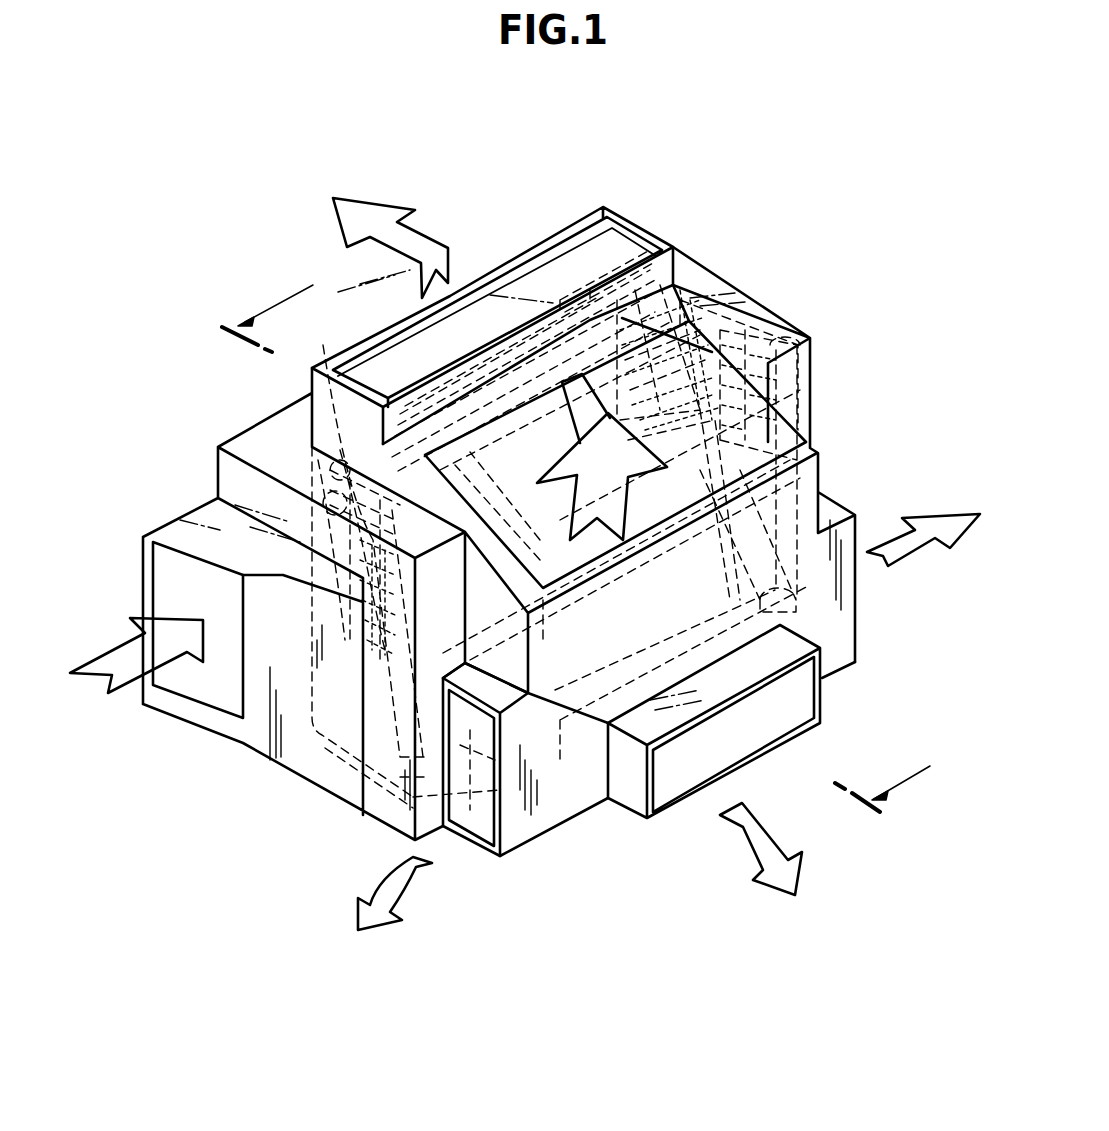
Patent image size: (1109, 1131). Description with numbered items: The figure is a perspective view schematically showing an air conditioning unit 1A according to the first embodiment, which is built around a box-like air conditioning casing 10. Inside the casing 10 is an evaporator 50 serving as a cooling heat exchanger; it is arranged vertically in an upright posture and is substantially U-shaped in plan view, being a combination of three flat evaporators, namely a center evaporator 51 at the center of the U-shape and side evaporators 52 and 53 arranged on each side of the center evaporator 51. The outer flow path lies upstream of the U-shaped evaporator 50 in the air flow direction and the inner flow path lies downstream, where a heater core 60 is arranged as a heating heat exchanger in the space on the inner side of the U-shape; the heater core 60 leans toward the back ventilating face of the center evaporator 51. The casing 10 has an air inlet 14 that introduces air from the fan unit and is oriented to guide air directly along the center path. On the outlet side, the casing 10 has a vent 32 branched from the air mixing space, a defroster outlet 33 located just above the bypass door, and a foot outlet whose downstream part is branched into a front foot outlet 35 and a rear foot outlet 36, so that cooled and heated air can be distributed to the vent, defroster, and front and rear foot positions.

The air conditioning unit 1A is at (722, 164).
The air conditioning casing 10 is at (248, 442).
The air inlet 14 is at (190, 688).
The vent 32 is at (790, 447).
The defroster outlet 33 is at (527, 272).
The front foot outlet 35 is at (470, 830).
The rear foot outlet 36 is at (672, 790).
The evaporator 50 is at (592, 282).
The center evaporator 51 is at (654, 262).
The side evaporator 52 is at (335, 400).
The side evaporator 53 is at (748, 345).
The heater core 60 is at (486, 760).